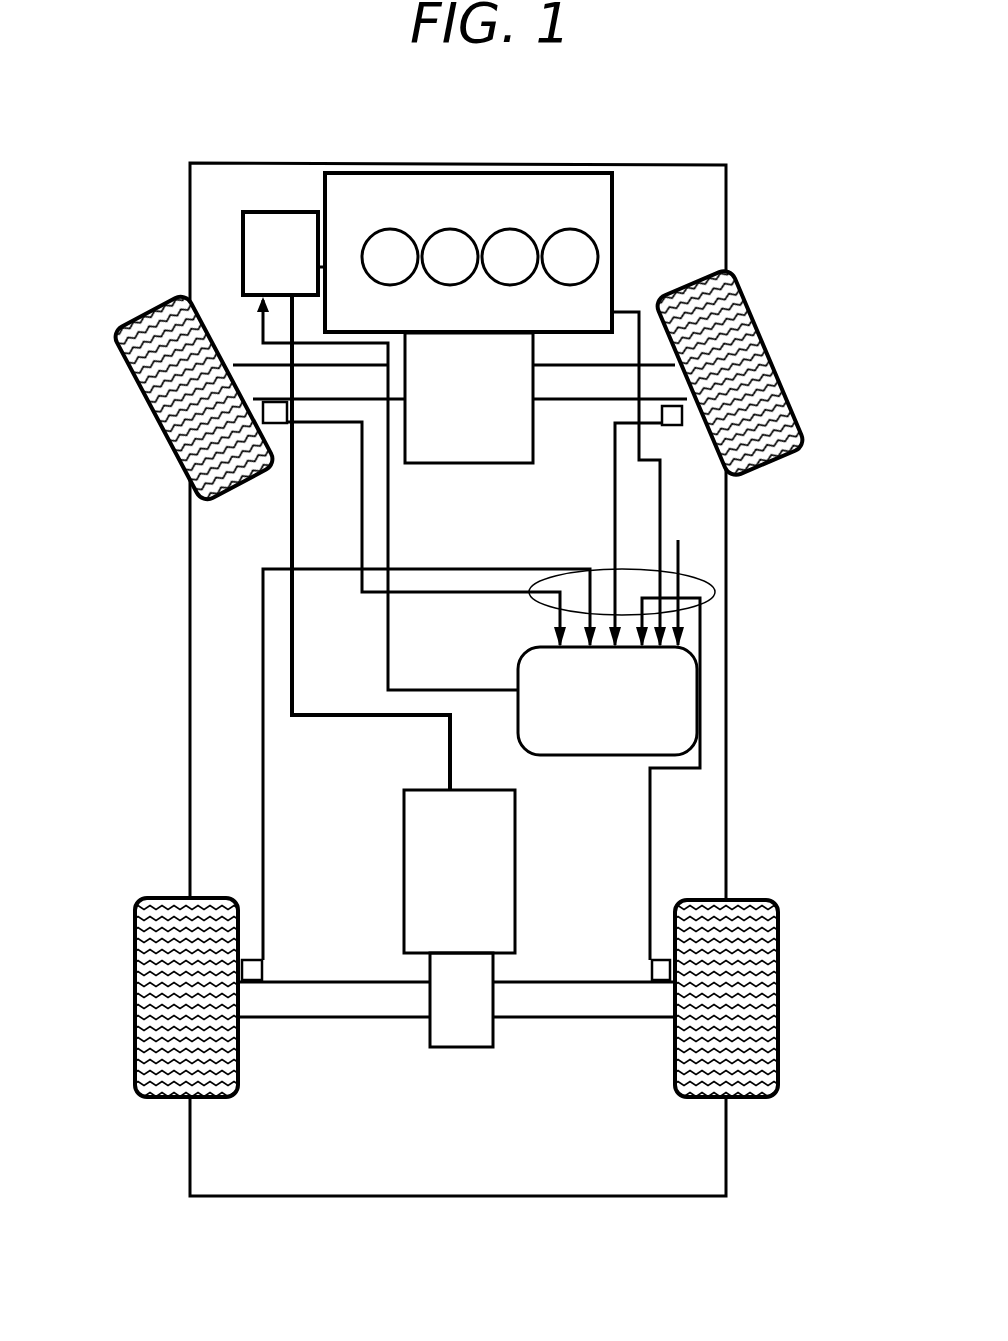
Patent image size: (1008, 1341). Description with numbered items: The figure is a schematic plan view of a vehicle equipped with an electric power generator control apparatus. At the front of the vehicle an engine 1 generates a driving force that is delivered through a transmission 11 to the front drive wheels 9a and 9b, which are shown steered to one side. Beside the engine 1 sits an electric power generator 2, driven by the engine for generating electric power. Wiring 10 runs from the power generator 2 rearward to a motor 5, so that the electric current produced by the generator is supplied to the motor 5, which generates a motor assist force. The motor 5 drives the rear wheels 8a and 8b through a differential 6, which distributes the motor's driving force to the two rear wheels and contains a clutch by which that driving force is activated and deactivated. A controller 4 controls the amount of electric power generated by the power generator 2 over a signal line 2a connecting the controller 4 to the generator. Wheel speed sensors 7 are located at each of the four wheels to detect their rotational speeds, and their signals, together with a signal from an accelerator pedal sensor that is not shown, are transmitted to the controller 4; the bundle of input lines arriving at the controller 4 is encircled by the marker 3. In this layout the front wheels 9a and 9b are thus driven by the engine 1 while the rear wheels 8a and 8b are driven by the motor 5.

The engine 1 is at (497, 200).
The electric power generator 2 is at (243, 223).
The signal line 2a is at (387, 550).
The sensor signal group 3 is at (715, 588).
The controller 4 is at (697, 684).
The motor 5 is at (403, 870).
The differential 6 is at (456, 1047).
The wheel speed sensors 7 is at (287, 420).
The rear wheel 8a is at (135, 1000).
The rear wheel 8b is at (778, 1018).
The front drive wheel 9a is at (752, 322).
The front drive wheel 9b is at (125, 315).
The wiring 10 is at (292, 637).
The transmission 11 is at (457, 440).